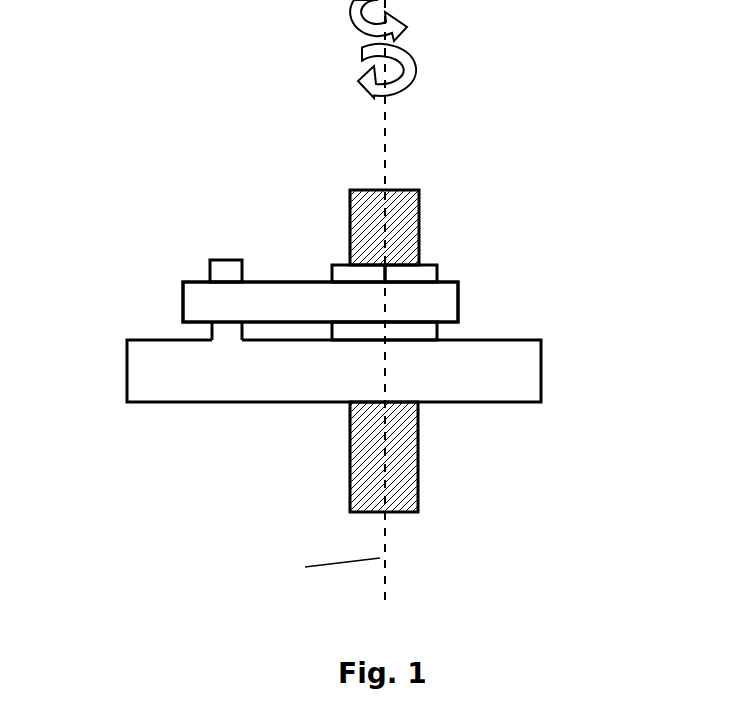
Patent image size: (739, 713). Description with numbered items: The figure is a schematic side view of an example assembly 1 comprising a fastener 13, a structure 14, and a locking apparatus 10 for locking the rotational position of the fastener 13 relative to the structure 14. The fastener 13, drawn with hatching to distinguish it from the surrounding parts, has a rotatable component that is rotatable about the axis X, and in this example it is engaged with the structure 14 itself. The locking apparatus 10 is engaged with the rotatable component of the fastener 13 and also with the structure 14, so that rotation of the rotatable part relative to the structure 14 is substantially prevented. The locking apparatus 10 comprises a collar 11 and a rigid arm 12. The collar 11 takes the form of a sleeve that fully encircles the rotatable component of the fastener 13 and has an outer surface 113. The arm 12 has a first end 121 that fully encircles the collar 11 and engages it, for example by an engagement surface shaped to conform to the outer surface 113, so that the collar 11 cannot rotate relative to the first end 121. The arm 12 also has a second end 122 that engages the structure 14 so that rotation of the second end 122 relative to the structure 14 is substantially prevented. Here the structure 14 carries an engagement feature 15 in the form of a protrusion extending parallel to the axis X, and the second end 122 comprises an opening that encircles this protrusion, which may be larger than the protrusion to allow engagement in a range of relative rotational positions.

The assembly 1 is at (158, 85).
The locking apparatus 10 is at (508, 240).
The collar 11 is at (338, 262).
The outer surface 113 is at (418, 273).
The rigid arm 12 is at (347, 315).
The first end 121 is at (442, 305).
The second end 122 is at (200, 294).
The fastener 13 is at (400, 467).
The structure 14 is at (155, 374).
The engagement feature 15 is at (215, 267).